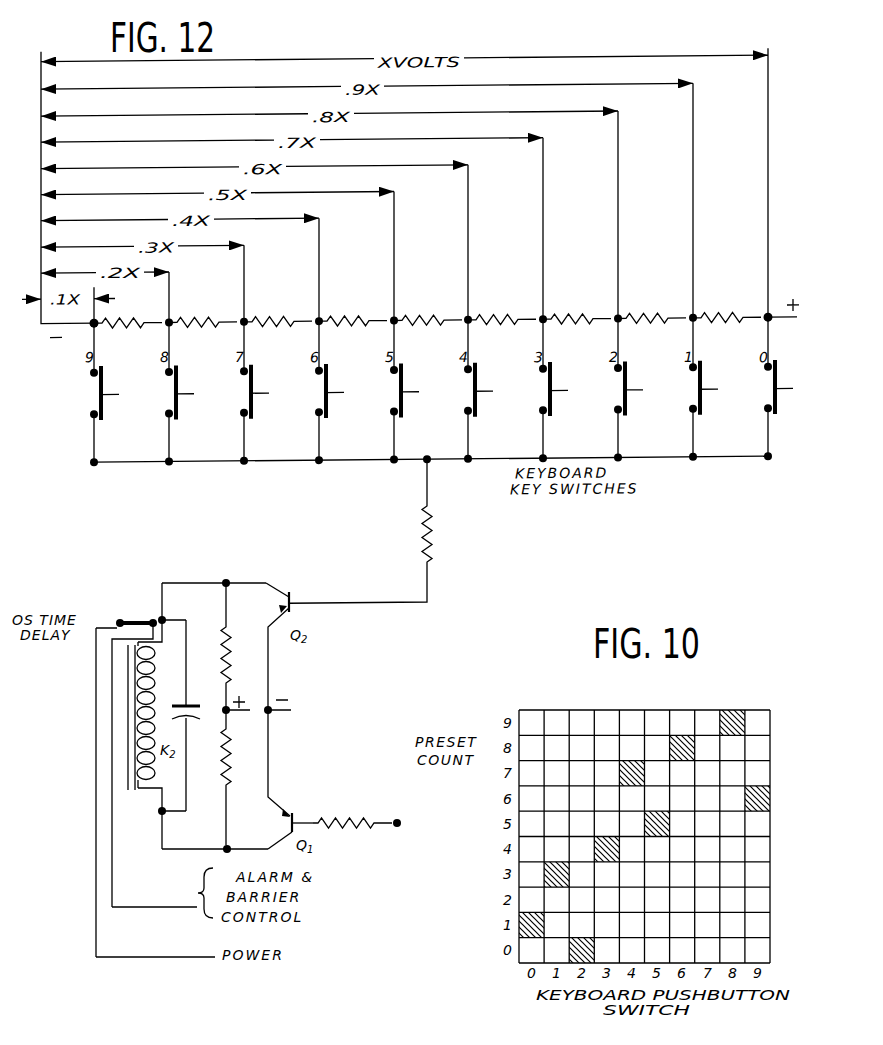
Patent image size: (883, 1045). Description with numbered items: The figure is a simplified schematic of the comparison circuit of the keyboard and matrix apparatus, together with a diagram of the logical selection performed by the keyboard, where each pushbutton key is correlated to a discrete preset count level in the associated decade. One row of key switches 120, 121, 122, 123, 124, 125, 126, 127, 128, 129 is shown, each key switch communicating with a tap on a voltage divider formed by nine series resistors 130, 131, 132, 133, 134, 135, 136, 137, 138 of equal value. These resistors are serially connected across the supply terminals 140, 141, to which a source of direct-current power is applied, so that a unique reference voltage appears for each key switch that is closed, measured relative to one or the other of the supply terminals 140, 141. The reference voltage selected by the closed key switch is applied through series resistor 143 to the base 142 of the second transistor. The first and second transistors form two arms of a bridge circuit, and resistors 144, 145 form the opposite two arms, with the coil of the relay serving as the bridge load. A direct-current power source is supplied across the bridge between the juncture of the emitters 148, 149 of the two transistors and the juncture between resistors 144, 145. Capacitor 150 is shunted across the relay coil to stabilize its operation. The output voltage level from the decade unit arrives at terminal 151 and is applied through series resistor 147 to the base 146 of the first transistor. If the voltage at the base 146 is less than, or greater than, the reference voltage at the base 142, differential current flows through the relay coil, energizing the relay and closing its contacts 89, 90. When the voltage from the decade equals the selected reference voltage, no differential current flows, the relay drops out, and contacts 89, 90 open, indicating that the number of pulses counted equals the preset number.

The relay contact 89 is at (119, 621).
The relay contact 90 is at (152, 622).
The key switch 120 is at (102, 409).
The key switch 121 is at (177, 410).
The key switch 122 is at (252, 410).
The key switch 123 is at (327, 411).
The key switch 124 is at (402, 412).
The key switch 125 is at (476, 412).
The key switch 126 is at (551, 413).
The key switch 127 is at (626, 414).
The key switch 128 is at (701, 414).
The key switch 129 is at (776, 419).
The series resistor 130 is at (121, 302).
The series resistor 131 is at (196, 303).
The series resistor 132 is at (271, 304).
The series resistor 133 is at (346, 304).
The series resistor 134 is at (419, 305).
The series resistor 135 is at (494, 305).
The series resistor 136 is at (567, 306).
The series resistor 137 is at (644, 307).
The series resistor 138 is at (717, 307).
The supply terminal 140 is at (770, 325).
The supply terminal 141 is at (92, 326).
The base of transistor Q2 142 is at (291, 601).
The series resistor 143 is at (433, 554).
The resistor 144 is at (230, 679).
The resistor 145 is at (240, 777).
The base of transistor Q1 146 is at (295, 815).
The series resistor 147 is at (346, 833).
The emitter of transistor Q2 148 is at (273, 622).
The emitter of transistor Q1 149 is at (275, 804).
The capacitor 150 is at (185, 703).
The decade terminal 151 is at (400, 820).